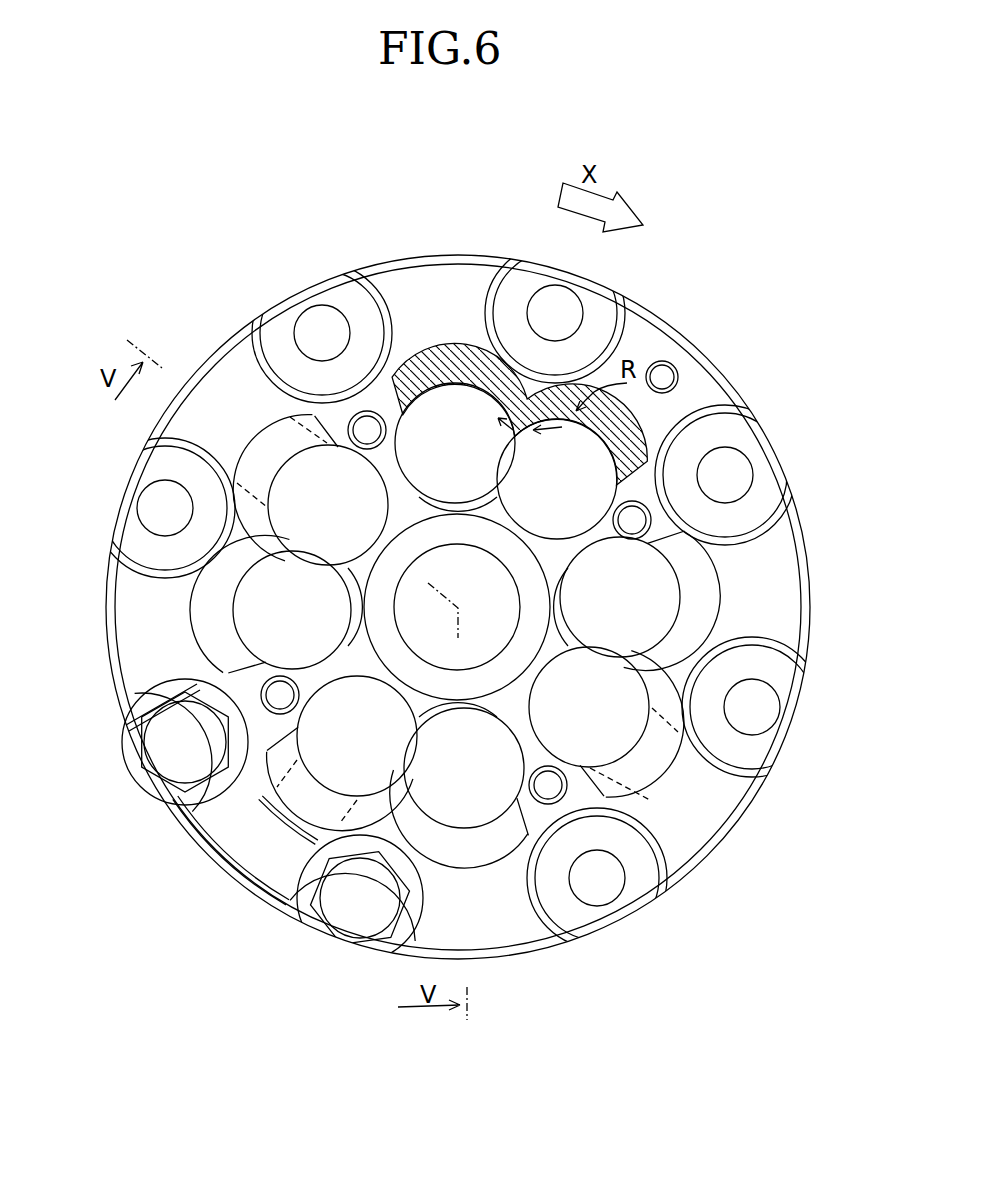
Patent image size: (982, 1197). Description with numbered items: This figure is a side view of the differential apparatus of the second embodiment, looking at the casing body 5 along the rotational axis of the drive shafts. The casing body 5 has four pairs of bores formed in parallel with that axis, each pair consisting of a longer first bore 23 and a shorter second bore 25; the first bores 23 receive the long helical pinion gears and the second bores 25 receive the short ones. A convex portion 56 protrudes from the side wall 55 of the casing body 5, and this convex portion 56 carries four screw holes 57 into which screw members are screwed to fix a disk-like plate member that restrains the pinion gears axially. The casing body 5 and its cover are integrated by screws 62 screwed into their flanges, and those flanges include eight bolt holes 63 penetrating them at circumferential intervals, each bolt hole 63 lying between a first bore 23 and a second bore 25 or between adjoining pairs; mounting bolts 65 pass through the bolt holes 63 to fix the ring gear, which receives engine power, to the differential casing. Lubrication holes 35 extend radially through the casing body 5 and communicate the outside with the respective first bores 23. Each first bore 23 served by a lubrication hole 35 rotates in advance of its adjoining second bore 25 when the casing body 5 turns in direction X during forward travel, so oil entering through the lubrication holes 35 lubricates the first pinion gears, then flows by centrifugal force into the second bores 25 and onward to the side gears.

The casing body 5 is at (660, 298).
The first bore 23 is at (283, 518).
The second bore 25 is at (250, 643).
The lubrication hole 35 is at (633, 410).
The side wall 55 is at (350, 568).
The convex portion 56 is at (382, 458).
The screw hole 57 is at (636, 522).
The screw 62 is at (664, 376).
The bolt hole 63 is at (758, 715).
The mounting bolt 65 is at (360, 918).